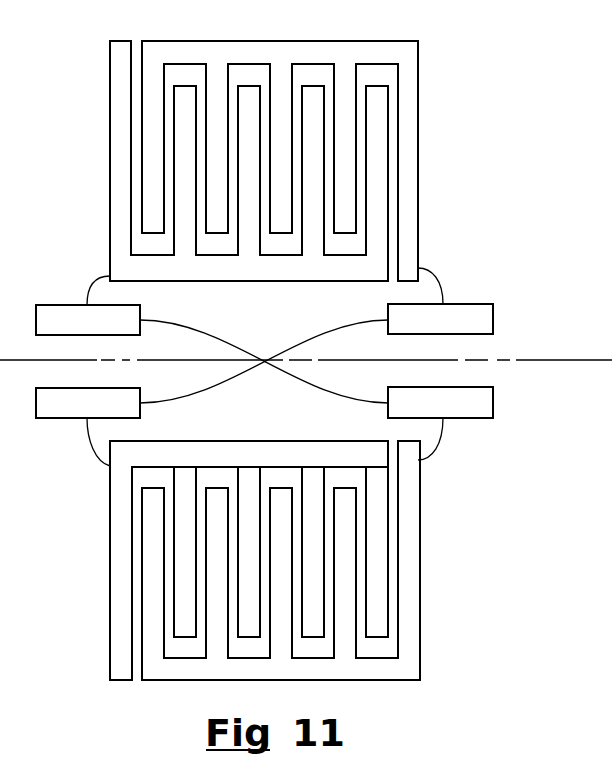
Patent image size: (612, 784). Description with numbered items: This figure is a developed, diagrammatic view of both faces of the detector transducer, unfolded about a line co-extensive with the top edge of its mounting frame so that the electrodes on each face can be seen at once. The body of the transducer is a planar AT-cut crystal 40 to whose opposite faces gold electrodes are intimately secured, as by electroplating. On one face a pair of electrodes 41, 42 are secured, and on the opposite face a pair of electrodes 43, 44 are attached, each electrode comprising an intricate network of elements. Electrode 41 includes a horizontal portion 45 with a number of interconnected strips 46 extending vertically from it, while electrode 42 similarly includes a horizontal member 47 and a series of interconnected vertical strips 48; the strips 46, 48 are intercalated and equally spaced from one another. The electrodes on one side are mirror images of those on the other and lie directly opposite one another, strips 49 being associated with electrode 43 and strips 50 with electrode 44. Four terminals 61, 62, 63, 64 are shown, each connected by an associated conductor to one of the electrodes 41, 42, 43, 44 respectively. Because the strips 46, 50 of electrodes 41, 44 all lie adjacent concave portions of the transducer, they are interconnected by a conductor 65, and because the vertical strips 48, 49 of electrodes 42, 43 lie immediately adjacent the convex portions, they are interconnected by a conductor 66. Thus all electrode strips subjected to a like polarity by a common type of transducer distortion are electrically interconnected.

The planar AT-cut crystal 40 is at (182, 477).
The electrode 41 is at (110, 553).
The electrode 42 is at (183, 681).
The electrode 43 is at (110, 188).
The electrode 44 is at (200, 41).
The horizontal portion 45 is at (218, 454).
The interconnected strips 46 is at (120, 487).
The horizontal member 47 is at (386, 668).
The interconnected vertical strips 48 is at (343, 650).
The strips 49 is at (110, 132).
The strips 50 is at (410, 216).
The terminal 61 is at (71, 415).
The terminal 62 is at (430, 415).
The terminal 63 is at (71, 331).
The terminal 64 is at (430, 331).
The conductor 65 is at (327, 327).
The conductor 66 is at (201, 326).